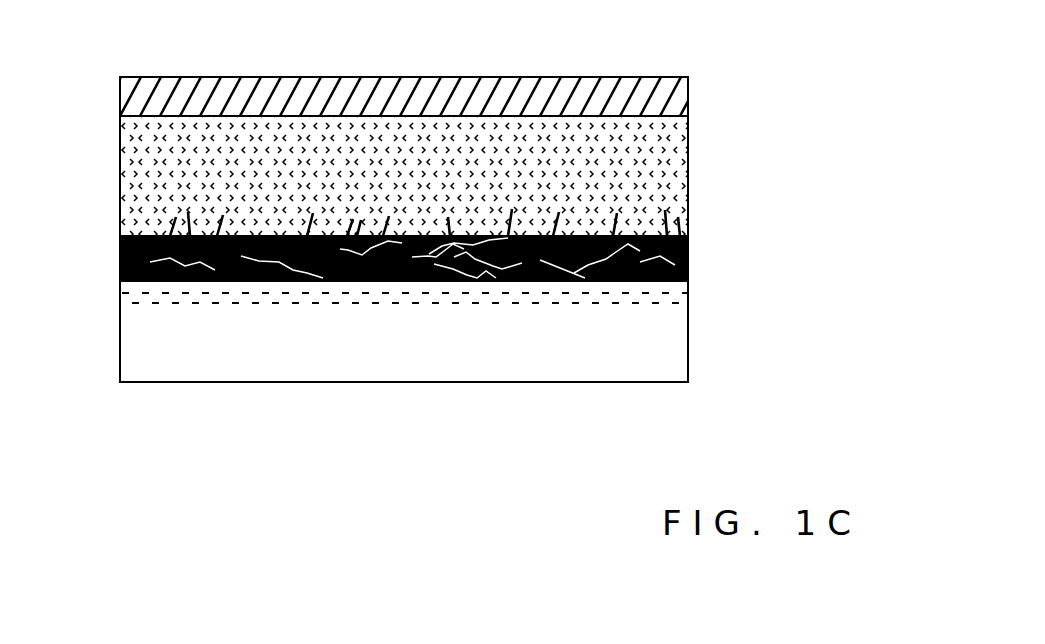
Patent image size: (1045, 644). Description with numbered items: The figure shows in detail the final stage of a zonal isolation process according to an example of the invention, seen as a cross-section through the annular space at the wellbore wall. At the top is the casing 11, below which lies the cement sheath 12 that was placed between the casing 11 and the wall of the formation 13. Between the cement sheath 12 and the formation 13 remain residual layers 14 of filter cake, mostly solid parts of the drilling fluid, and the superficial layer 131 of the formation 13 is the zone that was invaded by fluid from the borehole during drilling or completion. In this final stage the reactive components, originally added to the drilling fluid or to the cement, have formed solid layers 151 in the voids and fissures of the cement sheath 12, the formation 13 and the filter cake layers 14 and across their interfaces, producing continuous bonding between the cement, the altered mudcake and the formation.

The casing 11 is at (558, 77).
The cement sheath 12 is at (688, 172).
The formation 13 is at (452, 382).
The filter cake layer 14 is at (688, 268).
The superficial layer of the formation 131 is at (135, 290).
The solid layers 151 is at (168, 235).